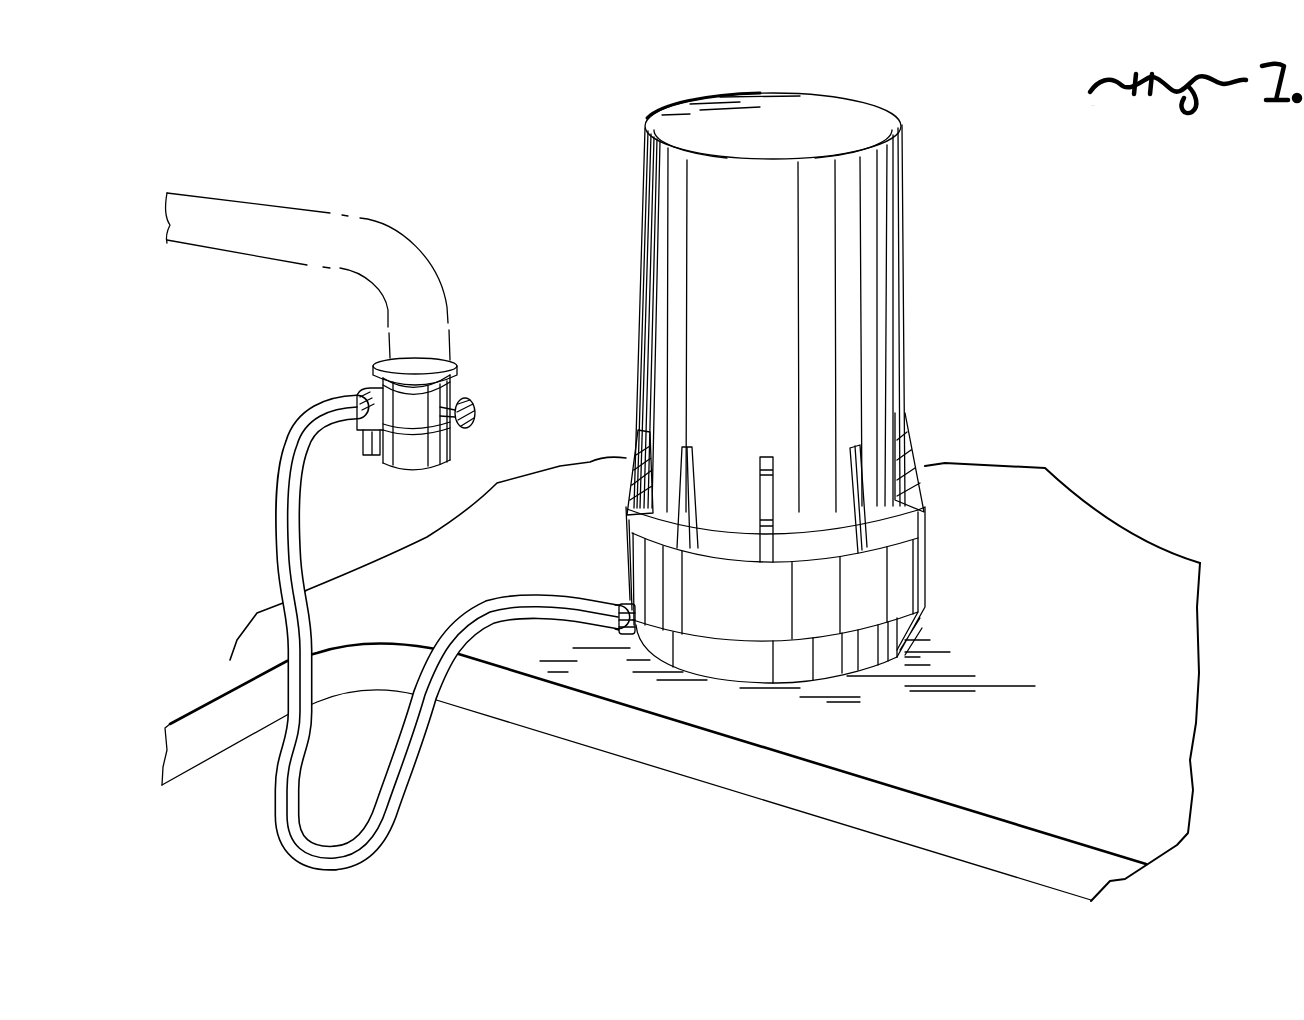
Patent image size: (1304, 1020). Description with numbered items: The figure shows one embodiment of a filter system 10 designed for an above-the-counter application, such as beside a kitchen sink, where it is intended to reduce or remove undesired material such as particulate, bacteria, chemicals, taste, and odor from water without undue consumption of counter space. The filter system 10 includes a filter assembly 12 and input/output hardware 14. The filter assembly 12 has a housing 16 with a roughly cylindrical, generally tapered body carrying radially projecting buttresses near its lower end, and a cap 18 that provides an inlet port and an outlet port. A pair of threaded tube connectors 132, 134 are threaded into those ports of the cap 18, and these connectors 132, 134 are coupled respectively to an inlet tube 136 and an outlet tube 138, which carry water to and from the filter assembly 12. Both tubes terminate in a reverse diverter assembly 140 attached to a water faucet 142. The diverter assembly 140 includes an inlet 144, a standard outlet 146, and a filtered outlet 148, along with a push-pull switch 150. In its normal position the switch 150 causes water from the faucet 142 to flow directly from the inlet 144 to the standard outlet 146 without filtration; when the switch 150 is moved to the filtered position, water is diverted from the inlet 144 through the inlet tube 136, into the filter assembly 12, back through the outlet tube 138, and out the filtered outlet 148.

The filter system 10 is at (962, 407).
The filter assembly 12 is at (905, 235).
The input/output hardware 14 is at (440, 632).
The housing 16 is at (882, 326).
The cap 18 is at (863, 663).
The threaded tube connector 132 is at (620, 600).
The threaded tube connector 134 is at (623, 635).
The inlet tube 136 is at (403, 727).
The outlet tube 138 is at (427, 727).
The reverse diverter assembly 140 is at (460, 383).
The water faucet 142 is at (362, 226).
The inlet 144 is at (380, 358).
The standard outlet 146 is at (437, 470).
The filtered outlet 148 is at (373, 458).
The push-pull switch 150 is at (477, 412).